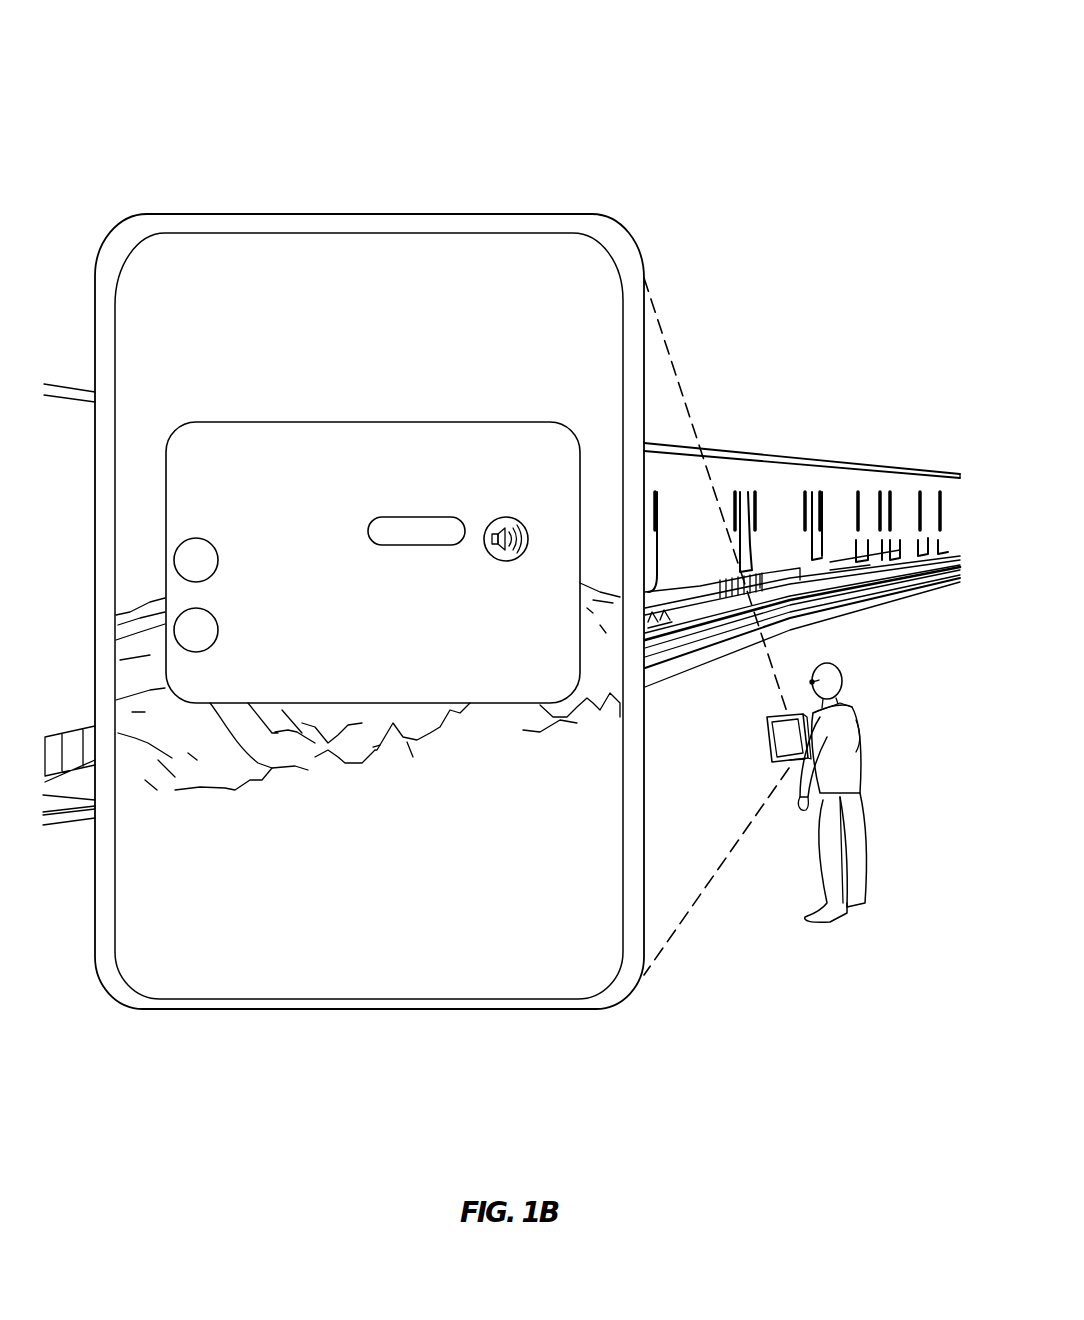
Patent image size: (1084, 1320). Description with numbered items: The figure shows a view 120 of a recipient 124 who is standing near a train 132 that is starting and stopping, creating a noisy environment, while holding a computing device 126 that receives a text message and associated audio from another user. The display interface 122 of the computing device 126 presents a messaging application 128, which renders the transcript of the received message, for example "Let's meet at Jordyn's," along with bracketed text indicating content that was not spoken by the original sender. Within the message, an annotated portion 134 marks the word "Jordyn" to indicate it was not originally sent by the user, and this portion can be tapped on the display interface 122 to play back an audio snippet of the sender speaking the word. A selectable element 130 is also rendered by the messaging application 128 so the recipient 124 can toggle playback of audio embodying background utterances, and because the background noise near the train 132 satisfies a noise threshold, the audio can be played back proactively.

The view 120 is at (172, 80).
The display interface 122 is at (570, 271).
The recipient 124 is at (842, 673).
The computing device 126 is at (770, 755).
The messaging application 128 is at (380, 480).
The selectable element 130 is at (505, 517).
The train 132 is at (748, 452).
The annotated portion 134 is at (432, 517).